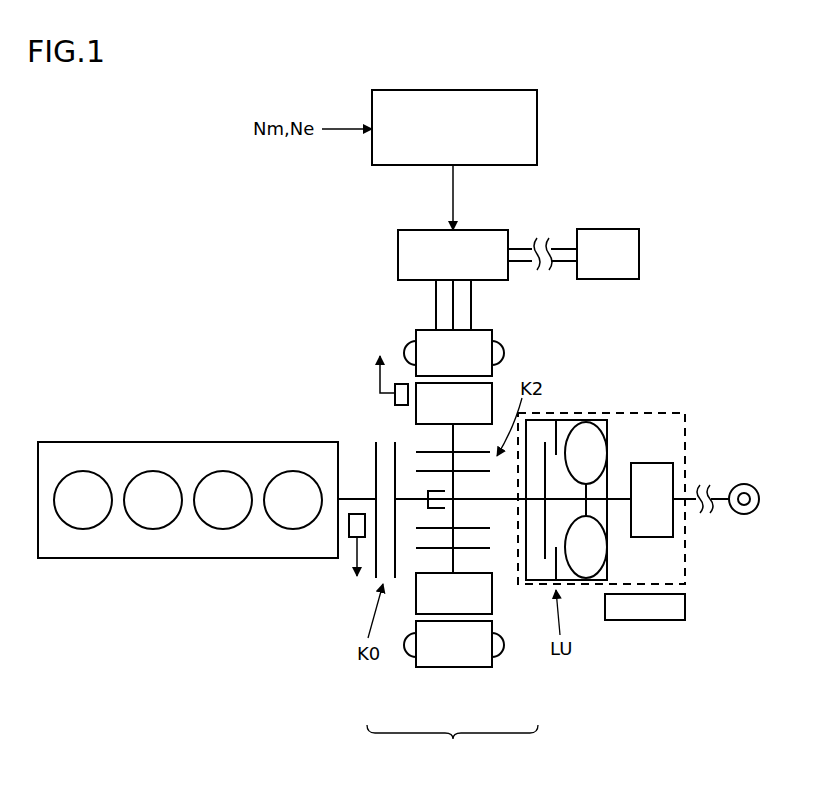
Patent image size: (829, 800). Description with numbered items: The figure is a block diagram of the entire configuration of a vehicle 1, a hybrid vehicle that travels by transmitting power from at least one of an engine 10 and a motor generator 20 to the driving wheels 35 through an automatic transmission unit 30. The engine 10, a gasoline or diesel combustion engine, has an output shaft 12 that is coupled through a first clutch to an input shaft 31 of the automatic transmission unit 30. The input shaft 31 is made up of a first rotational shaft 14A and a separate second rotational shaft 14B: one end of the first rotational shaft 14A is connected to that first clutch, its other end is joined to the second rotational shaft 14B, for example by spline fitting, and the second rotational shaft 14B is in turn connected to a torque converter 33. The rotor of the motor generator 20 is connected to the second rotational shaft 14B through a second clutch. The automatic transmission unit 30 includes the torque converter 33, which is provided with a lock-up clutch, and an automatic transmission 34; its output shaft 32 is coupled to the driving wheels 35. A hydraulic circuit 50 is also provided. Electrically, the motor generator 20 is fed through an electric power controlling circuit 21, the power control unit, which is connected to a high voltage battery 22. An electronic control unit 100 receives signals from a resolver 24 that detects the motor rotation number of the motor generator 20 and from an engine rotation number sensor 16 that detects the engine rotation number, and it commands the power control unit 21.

The vehicle 1 is at (150, 97).
The electronic control unit 100 is at (498, 90).
The electric power controlling circuit 21 is at (398, 256).
The high voltage battery 22 is at (607, 229).
The motor generator 20 is at (488, 330).
The resolver 24 is at (398, 405).
The engine 10 is at (86, 442).
The output shaft 12 is at (358, 497).
The engine rotation number sensor 16 is at (349, 527).
The first rotational shaft 14A is at (410, 503).
The second rotational shaft 14B is at (512, 505).
The input shaft 31 is at (452, 743).
The automatic transmission unit 30 is at (603, 413).
The torque converter 33 is at (527, 585).
The automatic transmission 34 is at (652, 463).
The output shaft 32 is at (689, 497).
The driving wheels 35 is at (746, 515).
The hydraulic circuit 50 is at (650, 620).